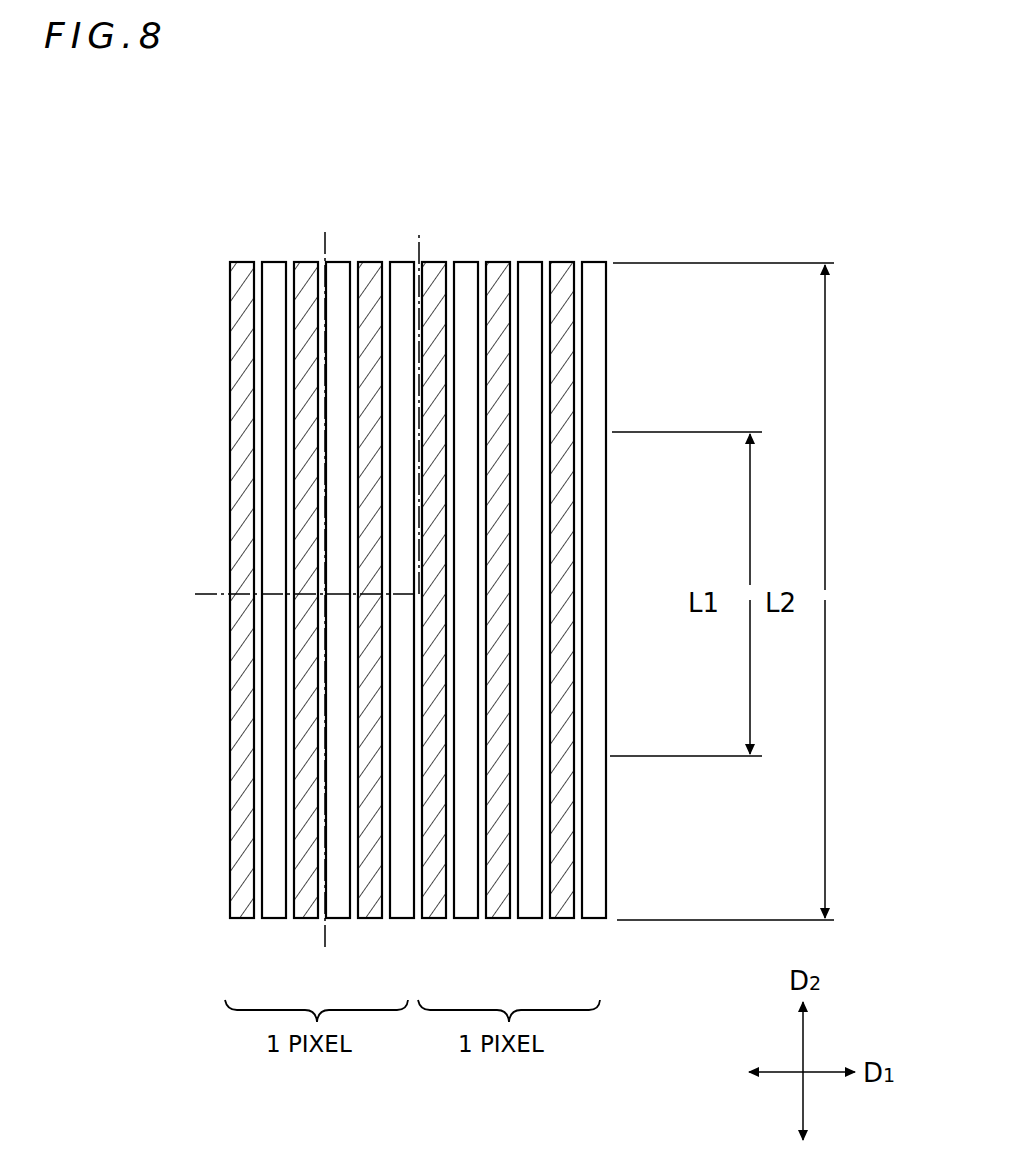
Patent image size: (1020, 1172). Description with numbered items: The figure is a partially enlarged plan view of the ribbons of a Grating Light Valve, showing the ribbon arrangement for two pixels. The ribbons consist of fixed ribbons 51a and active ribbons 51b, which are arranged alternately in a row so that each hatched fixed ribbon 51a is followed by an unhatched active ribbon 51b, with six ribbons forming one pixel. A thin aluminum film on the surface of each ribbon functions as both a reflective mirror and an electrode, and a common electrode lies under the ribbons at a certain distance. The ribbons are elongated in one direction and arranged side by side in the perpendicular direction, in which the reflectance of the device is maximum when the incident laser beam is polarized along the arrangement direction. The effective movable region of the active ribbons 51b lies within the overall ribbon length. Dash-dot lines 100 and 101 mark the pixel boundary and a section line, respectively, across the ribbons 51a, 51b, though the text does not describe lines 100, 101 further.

The fixed ribbons 51a is at (238, 268).
The active ribbons 51b is at (275, 268).
The pixel boundary line 100 is at (325, 232).
The section line 101 is at (419, 232).